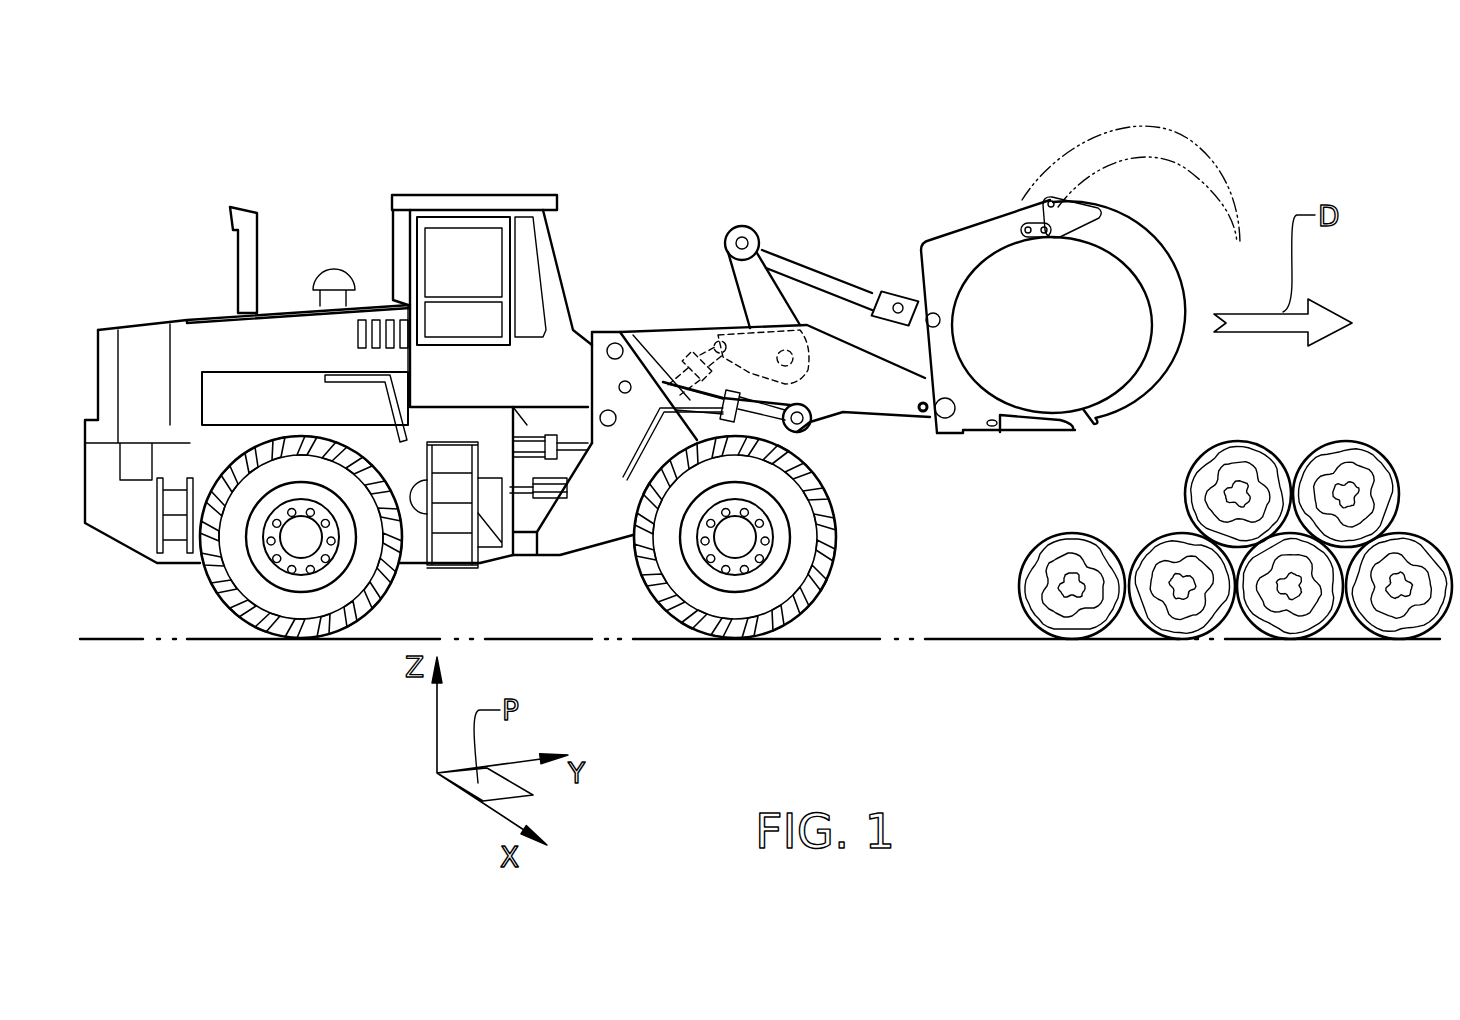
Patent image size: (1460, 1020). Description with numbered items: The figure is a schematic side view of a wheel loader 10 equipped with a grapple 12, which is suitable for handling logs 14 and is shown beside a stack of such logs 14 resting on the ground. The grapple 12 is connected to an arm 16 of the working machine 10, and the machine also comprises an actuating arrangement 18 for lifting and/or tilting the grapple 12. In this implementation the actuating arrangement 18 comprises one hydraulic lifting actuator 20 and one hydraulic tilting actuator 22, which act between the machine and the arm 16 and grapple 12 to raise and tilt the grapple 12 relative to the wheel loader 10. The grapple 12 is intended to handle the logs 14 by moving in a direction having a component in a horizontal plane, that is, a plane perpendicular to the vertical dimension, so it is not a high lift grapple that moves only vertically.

The wheel loader 10 is at (450, 163).
The grapple 12 is at (985, 158).
The logs 14 is at (1167, 665).
The arm 16 is at (857, 382).
The actuating arrangement 18 is at (717, 310).
The hydraulic lifting actuator 20 is at (658, 382).
The hydraulic tilting actuator 22 is at (688, 398).